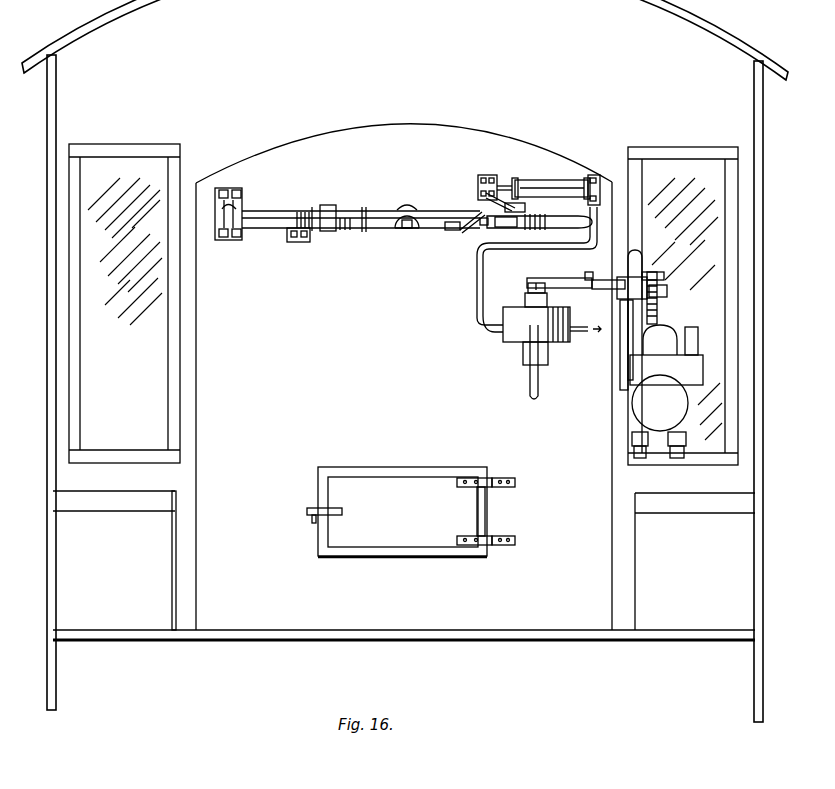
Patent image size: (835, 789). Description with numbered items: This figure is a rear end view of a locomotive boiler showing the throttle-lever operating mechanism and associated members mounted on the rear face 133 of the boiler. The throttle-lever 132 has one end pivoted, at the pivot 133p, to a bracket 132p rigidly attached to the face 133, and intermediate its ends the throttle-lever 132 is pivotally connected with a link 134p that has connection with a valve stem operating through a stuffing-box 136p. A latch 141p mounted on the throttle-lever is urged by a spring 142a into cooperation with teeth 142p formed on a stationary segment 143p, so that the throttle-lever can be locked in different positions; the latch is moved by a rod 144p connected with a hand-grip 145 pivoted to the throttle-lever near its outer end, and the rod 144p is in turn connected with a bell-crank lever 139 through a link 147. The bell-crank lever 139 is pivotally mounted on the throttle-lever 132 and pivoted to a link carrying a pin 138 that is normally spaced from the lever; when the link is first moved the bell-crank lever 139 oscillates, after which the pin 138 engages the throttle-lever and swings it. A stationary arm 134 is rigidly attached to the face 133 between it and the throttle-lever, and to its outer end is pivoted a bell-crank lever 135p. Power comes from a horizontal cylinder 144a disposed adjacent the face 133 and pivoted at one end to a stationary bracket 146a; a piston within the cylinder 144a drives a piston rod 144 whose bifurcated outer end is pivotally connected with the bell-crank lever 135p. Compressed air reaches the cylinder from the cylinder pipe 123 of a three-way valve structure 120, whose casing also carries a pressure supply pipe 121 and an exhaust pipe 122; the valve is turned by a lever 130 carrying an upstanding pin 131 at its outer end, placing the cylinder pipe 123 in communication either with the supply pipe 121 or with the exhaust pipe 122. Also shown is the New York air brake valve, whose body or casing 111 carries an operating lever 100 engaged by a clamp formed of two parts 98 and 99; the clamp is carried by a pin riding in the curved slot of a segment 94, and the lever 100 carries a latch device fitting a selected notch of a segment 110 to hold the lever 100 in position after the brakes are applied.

The rear end or face of the boiler 133 is at (364, 258).
The pivot 133p is at (242, 197).
The throttle-lever 132 is at (368, 215).
The bracket 132p is at (238, 224).
The teeth 142p is at (304, 211).
The stationary segment 143p is at (284, 230).
The latch 141p is at (313, 232).
The spring 142a is at (351, 231).
The link 134p is at (405, 229).
The stuffing-box 136p is at (413, 232).
The rod 144p is at (395, 241).
The link 147 is at (468, 224).
The stationary arm 134 is at (487, 175).
The piston rod 144 is at (519, 183).
The horizontal cylinder 144a is at (558, 176).
The stationary bracket 146a is at (593, 176).
The bell-crank lever 135p is at (526, 208).
The hand-grip 145 is at (565, 225).
The pin 138 is at (528, 231).
The bell-crank lever 139 is at (497, 233).
The cylinder pipe 123 is at (476, 283).
The three-way valve structure 120 is at (525, 328).
The lever 130 is at (552, 281).
The upstanding pin 131 is at (589, 272).
The pressure supply pipe 121 is at (530, 384).
The exhaust pipe 122 is at (578, 334).
The clamp part 98 is at (618, 292).
The segment 110 is at (630, 330).
The operating lever 100 is at (640, 260).
The clamp part 99 is at (660, 270).
The segment 94 is at (660, 300).
The valve body or casing 111 is at (666, 391).